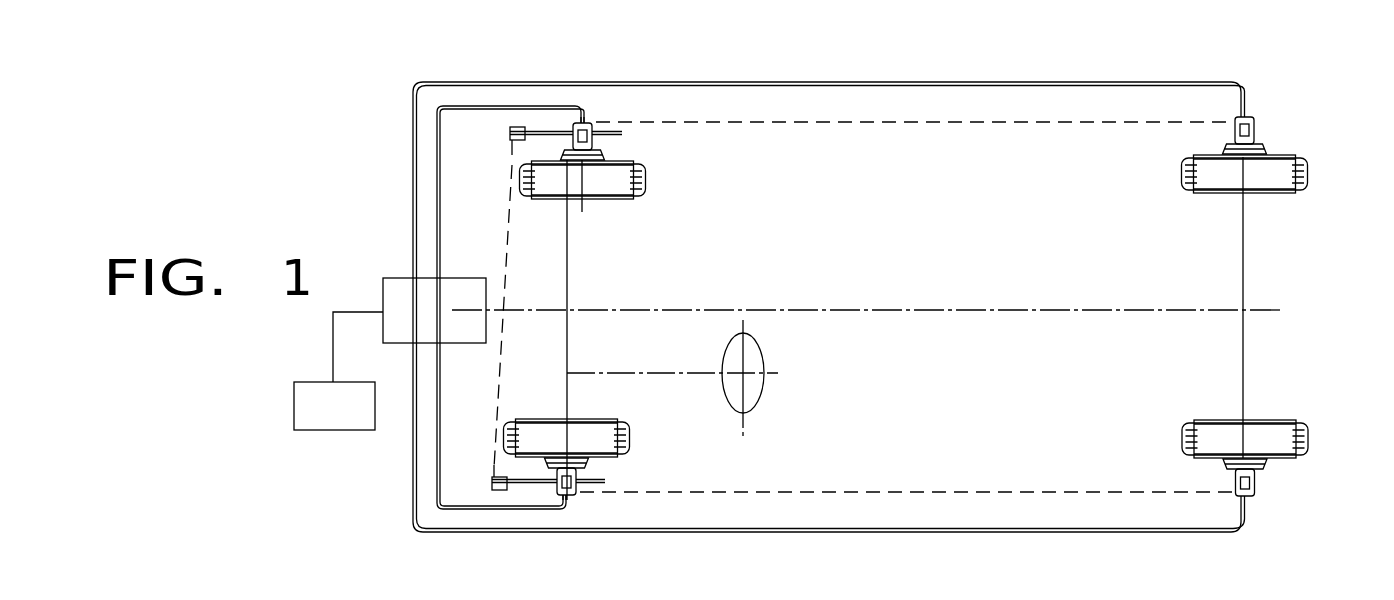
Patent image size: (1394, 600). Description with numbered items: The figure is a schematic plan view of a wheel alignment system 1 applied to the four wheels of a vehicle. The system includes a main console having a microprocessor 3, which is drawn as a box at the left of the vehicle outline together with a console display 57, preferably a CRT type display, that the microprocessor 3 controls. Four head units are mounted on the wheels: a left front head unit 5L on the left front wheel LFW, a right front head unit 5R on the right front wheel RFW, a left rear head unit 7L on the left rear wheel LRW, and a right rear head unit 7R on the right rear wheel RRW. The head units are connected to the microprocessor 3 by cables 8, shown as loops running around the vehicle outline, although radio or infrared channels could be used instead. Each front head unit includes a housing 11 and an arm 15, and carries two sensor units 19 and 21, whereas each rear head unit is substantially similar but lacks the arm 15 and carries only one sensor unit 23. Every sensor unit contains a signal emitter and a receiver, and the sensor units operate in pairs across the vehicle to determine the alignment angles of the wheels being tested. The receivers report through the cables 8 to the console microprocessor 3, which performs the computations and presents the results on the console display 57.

The wheel alignment system 1 is at (992, 66).
The microprocessor 3 is at (393, 292).
The right front head unit 5R is at (616, 147).
The left front head unit 5L is at (600, 470).
The right rear head unit 7R is at (1260, 310).
The left rear head unit 7L is at (1286, 477).
The cables 8 is at (820, 82).
The housing 11 is at (863, 347).
The arm 15 is at (548, 131).
The sensor unit 19 is at (510, 128).
The sensor unit 21 is at (590, 124).
The sensor unit 23 is at (1236, 118).
The console display 57 is at (342, 430).
The right front wheel RFW is at (638, 179).
The left front wheel LFW is at (628, 433).
The right rear wheel RRW is at (1192, 175).
The left rear wheel LRW is at (1192, 440).